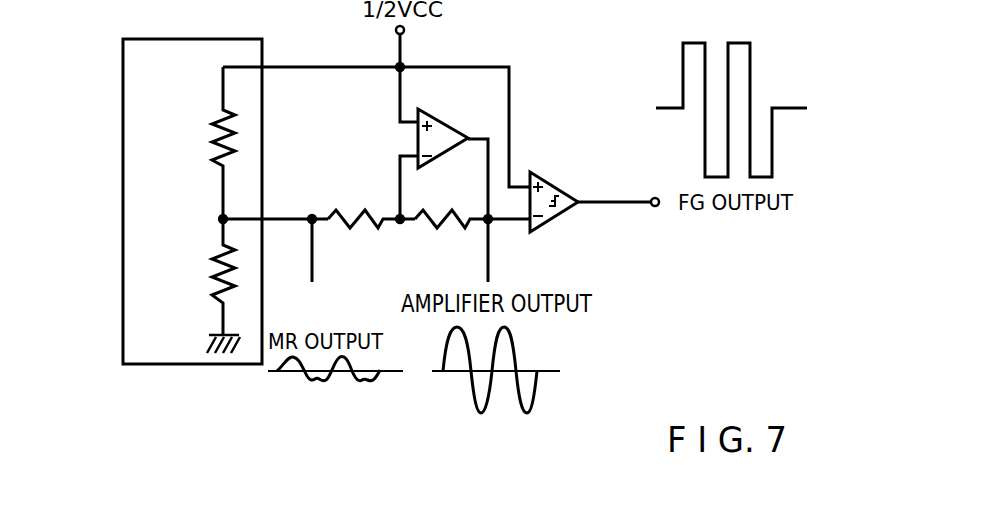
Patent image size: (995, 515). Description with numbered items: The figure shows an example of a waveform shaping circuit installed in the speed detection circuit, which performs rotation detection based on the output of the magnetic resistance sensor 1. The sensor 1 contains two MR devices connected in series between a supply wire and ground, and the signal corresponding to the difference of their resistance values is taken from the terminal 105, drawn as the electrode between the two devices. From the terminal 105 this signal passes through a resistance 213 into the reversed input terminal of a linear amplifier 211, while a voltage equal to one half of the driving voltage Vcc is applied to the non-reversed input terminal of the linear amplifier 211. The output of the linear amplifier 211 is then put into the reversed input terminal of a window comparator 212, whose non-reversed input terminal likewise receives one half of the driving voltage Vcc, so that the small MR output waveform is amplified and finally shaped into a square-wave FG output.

The magnetic resistance sensor 1 is at (160, 364).
The terminal 105 is at (223, 219).
The linear amplifier 211 is at (447, 127).
The window comparator 212 is at (562, 188).
The resistance 213 is at (347, 227).